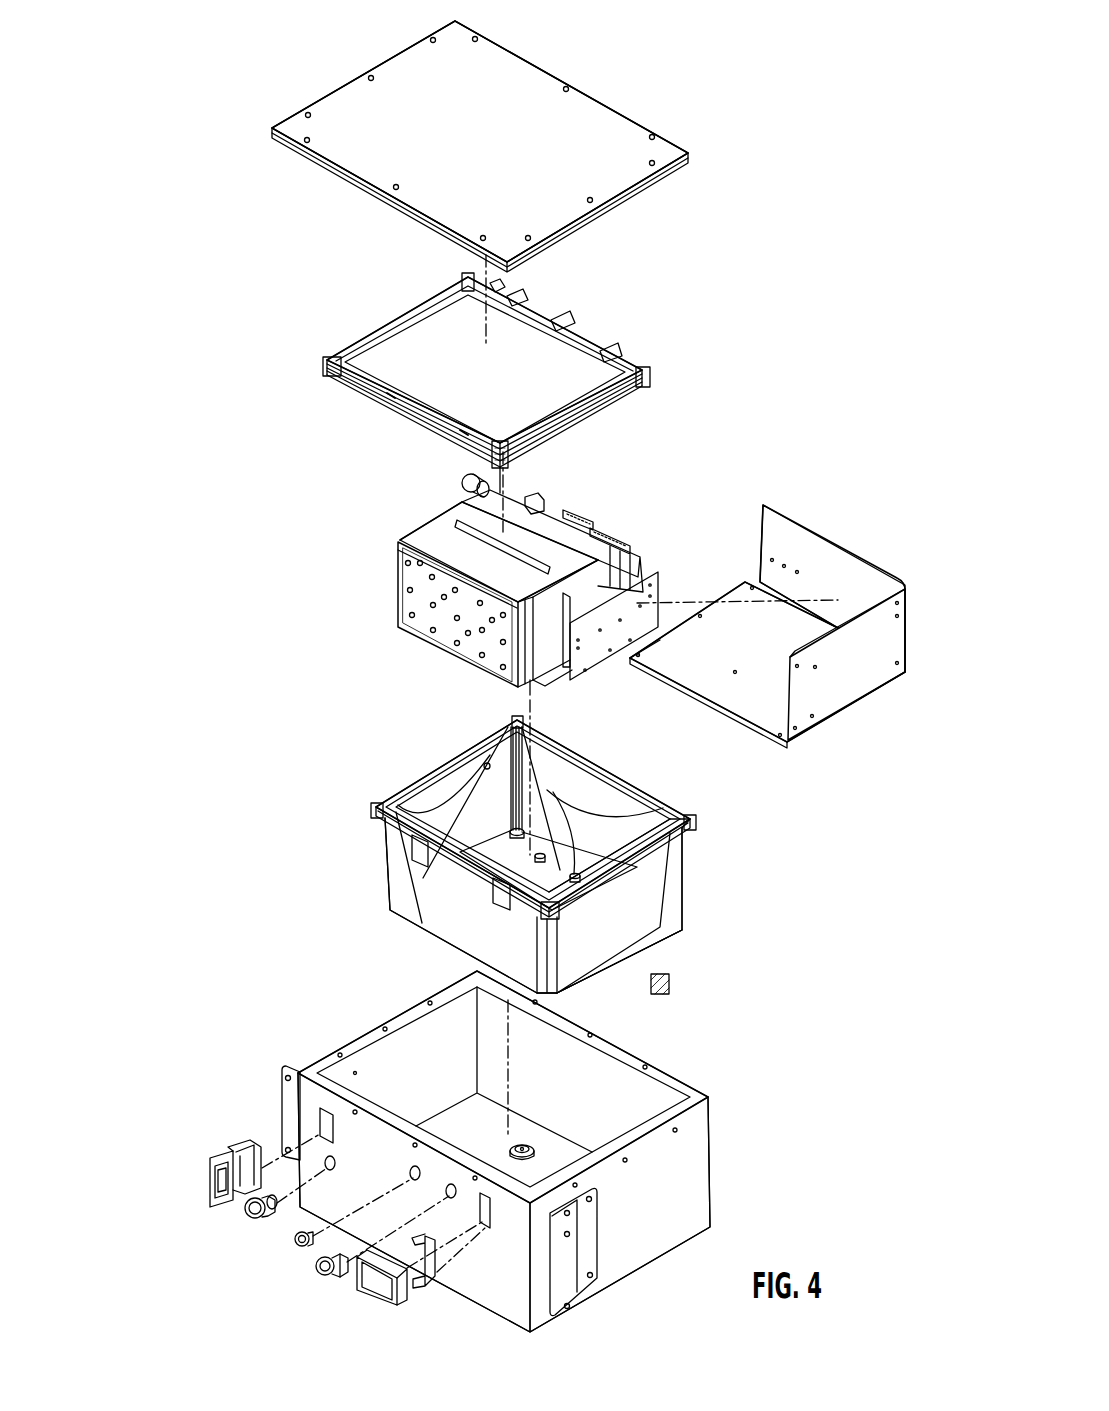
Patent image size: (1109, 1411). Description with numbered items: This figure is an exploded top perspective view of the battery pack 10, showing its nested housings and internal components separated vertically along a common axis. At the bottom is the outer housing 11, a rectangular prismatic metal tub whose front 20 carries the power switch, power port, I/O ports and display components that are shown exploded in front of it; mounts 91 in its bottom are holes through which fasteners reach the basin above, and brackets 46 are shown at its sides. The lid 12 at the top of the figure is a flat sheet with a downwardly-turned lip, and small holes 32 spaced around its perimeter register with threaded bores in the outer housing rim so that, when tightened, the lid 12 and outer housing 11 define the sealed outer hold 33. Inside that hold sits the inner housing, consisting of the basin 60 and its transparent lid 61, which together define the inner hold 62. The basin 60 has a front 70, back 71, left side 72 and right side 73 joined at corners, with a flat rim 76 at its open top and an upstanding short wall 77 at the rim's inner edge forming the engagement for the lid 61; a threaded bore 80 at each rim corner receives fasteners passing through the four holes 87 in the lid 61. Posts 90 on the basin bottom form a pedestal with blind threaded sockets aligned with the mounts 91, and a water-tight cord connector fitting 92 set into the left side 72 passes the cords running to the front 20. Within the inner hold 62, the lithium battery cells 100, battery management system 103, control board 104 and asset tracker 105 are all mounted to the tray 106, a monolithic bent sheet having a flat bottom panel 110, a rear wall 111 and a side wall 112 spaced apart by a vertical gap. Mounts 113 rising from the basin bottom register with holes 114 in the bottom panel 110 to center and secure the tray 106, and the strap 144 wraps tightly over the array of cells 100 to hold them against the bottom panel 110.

The battery pack 10 is at (138, 118).
The outer housing 11 is at (720, 1149).
The lid 12 is at (706, 150).
The front 20 is at (327, 1194).
The holes 32 is at (656, 130).
The outer hold 33 is at (612, 1104).
The mounting bracket 46 is at (288, 1093).
The basin 60 is at (331, 856).
The lid 61 is at (330, 387).
The inner hold 62 is at (622, 822).
The front 70 is at (397, 881).
The back 71 is at (580, 773).
The left side 72 is at (428, 792).
The right side 73 is at (612, 925).
The rim 76 is at (665, 800).
The wall 77 is at (632, 790).
The threaded bore 80 is at (692, 818).
The holes 87 is at (641, 368).
The posts 90 is at (511, 836).
The mounts 91 is at (522, 1142).
The cord connector fitting 92 is at (483, 772).
The lithium battery cells 100 is at (488, 528).
The battery management system 103 is at (607, 526).
The control board 104 is at (665, 580).
The asset tracker 105 is at (532, 484).
The tray 106 is at (907, 578).
The bottom panel 110 is at (755, 696).
The rear wall 111 is at (815, 540).
The side wall 112 is at (856, 681).
The mounts 113 is at (541, 850).
The holes 114 is at (642, 656).
The strap 144 is at (432, 522).